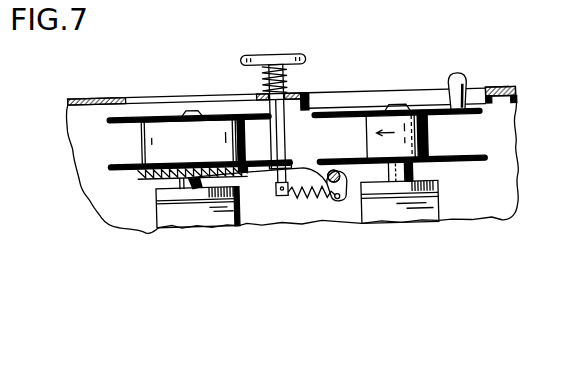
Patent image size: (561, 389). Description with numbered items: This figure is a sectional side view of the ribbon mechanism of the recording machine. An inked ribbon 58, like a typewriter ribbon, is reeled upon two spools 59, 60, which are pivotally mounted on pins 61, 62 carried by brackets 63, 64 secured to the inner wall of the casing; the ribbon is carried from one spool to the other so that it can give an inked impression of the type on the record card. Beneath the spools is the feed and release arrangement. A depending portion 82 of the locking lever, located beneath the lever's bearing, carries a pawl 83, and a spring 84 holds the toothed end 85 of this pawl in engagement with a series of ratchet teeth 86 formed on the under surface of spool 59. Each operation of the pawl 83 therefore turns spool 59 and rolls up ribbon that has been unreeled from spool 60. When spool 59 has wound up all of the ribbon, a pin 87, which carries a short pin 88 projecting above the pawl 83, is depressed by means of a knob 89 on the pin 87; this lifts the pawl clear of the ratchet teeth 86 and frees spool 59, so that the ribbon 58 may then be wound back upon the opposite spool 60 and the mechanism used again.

The inked ribbon 58 is at (233, 136).
The spool 59 is at (138, 118).
The spool 60 is at (353, 118).
The pin 61 is at (187, 175).
The pin 62 is at (412, 178).
The bracket 63 is at (157, 200).
The bracket 64 is at (437, 208).
The depending portion 82 is at (333, 171).
The pawl 83 is at (318, 178).
The spring 84 is at (301, 196).
The toothed end 85 is at (233, 205).
The ratchet teeth 86 is at (143, 163).
The pin 87 is at (284, 138).
The short pin 88 is at (244, 167).
The knob 89 is at (281, 53).